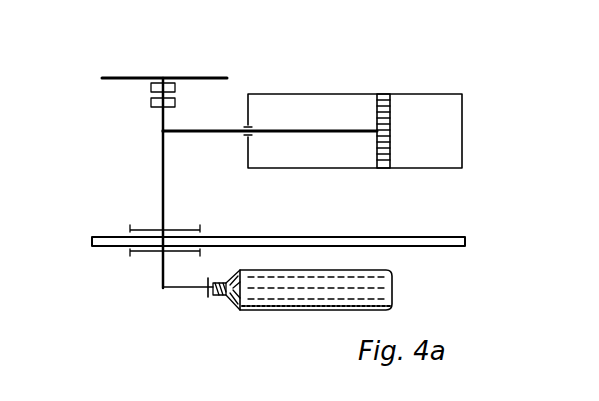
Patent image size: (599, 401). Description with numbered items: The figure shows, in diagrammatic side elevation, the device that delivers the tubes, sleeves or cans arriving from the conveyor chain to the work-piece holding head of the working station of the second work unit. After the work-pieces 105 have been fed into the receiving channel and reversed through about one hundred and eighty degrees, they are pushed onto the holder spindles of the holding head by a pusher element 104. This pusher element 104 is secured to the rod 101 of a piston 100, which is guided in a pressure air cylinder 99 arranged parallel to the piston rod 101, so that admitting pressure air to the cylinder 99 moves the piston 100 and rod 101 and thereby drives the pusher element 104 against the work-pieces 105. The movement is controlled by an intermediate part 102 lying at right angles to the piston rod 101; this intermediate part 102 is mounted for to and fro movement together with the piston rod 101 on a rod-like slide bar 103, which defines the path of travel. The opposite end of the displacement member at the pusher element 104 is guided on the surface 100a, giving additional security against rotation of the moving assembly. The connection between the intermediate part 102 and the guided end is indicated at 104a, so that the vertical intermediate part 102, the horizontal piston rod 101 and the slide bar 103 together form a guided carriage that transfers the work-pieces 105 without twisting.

The surface 100a is at (125, 77).
The coupling 104a is at (160, 118).
The intermediate part 102 is at (161, 173).
The rod 101 is at (277, 129).
The pressure air cylinder 99 is at (320, 93).
The piston 100 is at (388, 108).
The rod-like slide bar 103 is at (440, 241).
The pusher element 104 is at (177, 292).
The work-pieces 105 is at (263, 299).